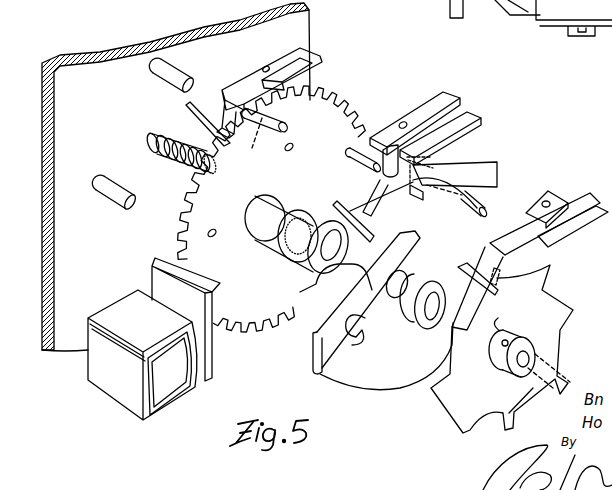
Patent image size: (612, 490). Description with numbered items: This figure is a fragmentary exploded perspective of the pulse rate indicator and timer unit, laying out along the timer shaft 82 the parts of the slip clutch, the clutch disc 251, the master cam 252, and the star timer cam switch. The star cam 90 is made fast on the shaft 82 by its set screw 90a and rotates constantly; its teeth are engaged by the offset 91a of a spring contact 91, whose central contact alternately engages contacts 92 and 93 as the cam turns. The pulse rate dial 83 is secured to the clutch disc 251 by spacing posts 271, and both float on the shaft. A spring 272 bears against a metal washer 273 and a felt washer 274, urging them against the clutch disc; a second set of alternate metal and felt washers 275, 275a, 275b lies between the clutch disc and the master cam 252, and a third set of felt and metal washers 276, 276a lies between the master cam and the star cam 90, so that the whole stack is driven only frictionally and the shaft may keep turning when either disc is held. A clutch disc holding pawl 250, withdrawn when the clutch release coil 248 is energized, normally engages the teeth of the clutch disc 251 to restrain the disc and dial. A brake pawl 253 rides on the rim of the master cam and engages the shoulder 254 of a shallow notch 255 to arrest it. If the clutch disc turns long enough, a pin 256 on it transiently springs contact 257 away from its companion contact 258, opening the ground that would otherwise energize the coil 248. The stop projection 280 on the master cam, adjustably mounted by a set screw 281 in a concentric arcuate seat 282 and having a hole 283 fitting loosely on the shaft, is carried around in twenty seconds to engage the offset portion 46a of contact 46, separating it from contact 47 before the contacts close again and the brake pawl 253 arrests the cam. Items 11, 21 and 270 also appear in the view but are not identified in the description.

The frame 11 is at (90, 2).
The housing 21 is at (160, 0).
The contact 46 is at (456, 124).
The offset portion 46a is at (345, 206).
The contact 47 is at (460, 140).
The timer shaft 82 is at (567, 380).
The pulse rate dial 83 is at (301, 37).
The star cam 90 is at (548, 313).
The set screw 90a is at (509, 316).
The spring contact 91 is at (518, 240).
The offset 91a is at (458, 266).
The contact 92 is at (548, 198).
The contact 93 is at (575, 235).
The clutch release coil 248 is at (162, 392).
The clutch disc holding pawl 250 is at (152, 273).
The clutch disc 251 is at (384, 97).
The master cam 252 is at (386, 342).
The brake pawl 253 is at (470, 160).
The shoulder 254 is at (415, 192).
The shallow notch 255 is at (338, 266).
The pin 256 is at (263, 135).
The spring contact 257 is at (291, 90).
The companion contact 258 is at (314, 58).
The pin 270 is at (352, 150).
The spacing posts 271 is at (166, 76).
The spring 272 is at (168, 156).
The metal washer 273 is at (171, 178).
The felt washer 274 is at (185, 160).
The metal washer 275 is at (291, 247).
The felt washer 275a is at (300, 252).
The metal washer 275b is at (318, 262).
The felt washer 276 is at (425, 330).
The metal washer 276a is at (445, 330).
The stop projection 280 is at (312, 369).
The set screw 281 is at (317, 325).
The concentric arcuate seat 282 is at (367, 320).
The hole 283 is at (414, 195).